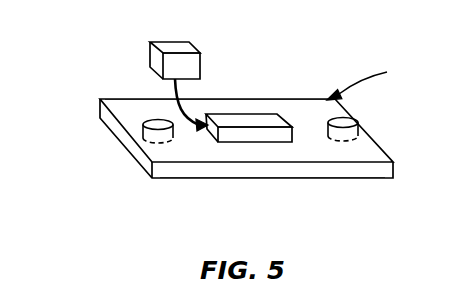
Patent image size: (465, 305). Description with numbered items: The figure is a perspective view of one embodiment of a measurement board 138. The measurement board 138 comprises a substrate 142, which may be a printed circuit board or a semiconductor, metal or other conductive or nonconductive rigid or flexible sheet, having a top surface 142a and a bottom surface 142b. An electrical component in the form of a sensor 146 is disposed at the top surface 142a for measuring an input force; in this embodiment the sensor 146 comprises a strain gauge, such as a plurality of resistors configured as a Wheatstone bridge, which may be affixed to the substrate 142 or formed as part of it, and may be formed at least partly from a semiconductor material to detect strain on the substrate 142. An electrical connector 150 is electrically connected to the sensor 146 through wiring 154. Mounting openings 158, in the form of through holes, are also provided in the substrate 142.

The measurement board 138 is at (380, 79).
The substrate 142 is at (349, 172).
The top surface 142a is at (284, 106).
The bottom surface 142b is at (290, 180).
The sensor 146 is at (244, 118).
The electrical connector 150 is at (172, 47).
The wiring 154 is at (204, 124).
The mounting openings 158 is at (148, 120).